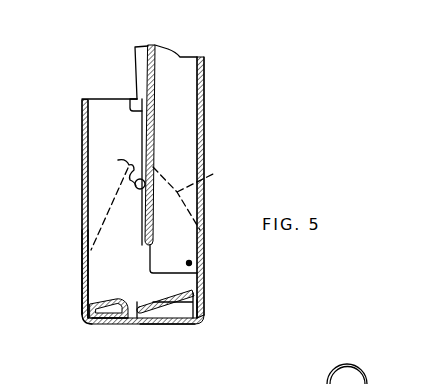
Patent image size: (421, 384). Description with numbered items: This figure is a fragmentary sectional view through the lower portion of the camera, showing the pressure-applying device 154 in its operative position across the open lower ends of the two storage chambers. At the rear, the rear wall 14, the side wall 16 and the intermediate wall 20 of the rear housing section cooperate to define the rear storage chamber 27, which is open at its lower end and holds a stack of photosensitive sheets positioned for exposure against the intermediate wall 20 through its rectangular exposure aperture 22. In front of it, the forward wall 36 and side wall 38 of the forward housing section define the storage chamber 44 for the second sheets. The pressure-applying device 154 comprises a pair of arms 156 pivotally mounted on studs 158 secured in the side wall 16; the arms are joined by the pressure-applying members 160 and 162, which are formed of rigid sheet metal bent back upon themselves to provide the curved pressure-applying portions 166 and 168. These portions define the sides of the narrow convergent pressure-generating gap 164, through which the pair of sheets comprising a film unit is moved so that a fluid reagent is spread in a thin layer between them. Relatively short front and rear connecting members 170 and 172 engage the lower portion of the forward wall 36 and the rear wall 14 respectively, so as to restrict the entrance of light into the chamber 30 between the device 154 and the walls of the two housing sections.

The rear wall 14 is at (82, 191).
The side wall 16 is at (89, 99).
The intermediate wall 20 is at (130, 98).
The rectangular exposure aperture 22 is at (142, 137).
The rear storage chamber 27 is at (82, 138).
The chamber 30 is at (84, 253).
The forward wall 36 is at (204, 132).
The side wall 38 is at (175, 58).
The storage chamber 44 is at (195, 108).
The pressure-applying device 154 is at (212, 327).
The arm 156 is at (215, 173).
The stud 158 is at (117, 199).
The pressure-applying member 160 is at (177, 331).
The pressure-applying member 162 is at (101, 332).
The pressure-generating gap 164 is at (137, 325).
The curved pressure-applying portion 166 is at (150, 255).
The curved pressure-applying portion 168 is at (133, 300).
The front connecting member 170 is at (204, 289).
The rear connecting member 172 is at (83, 317).